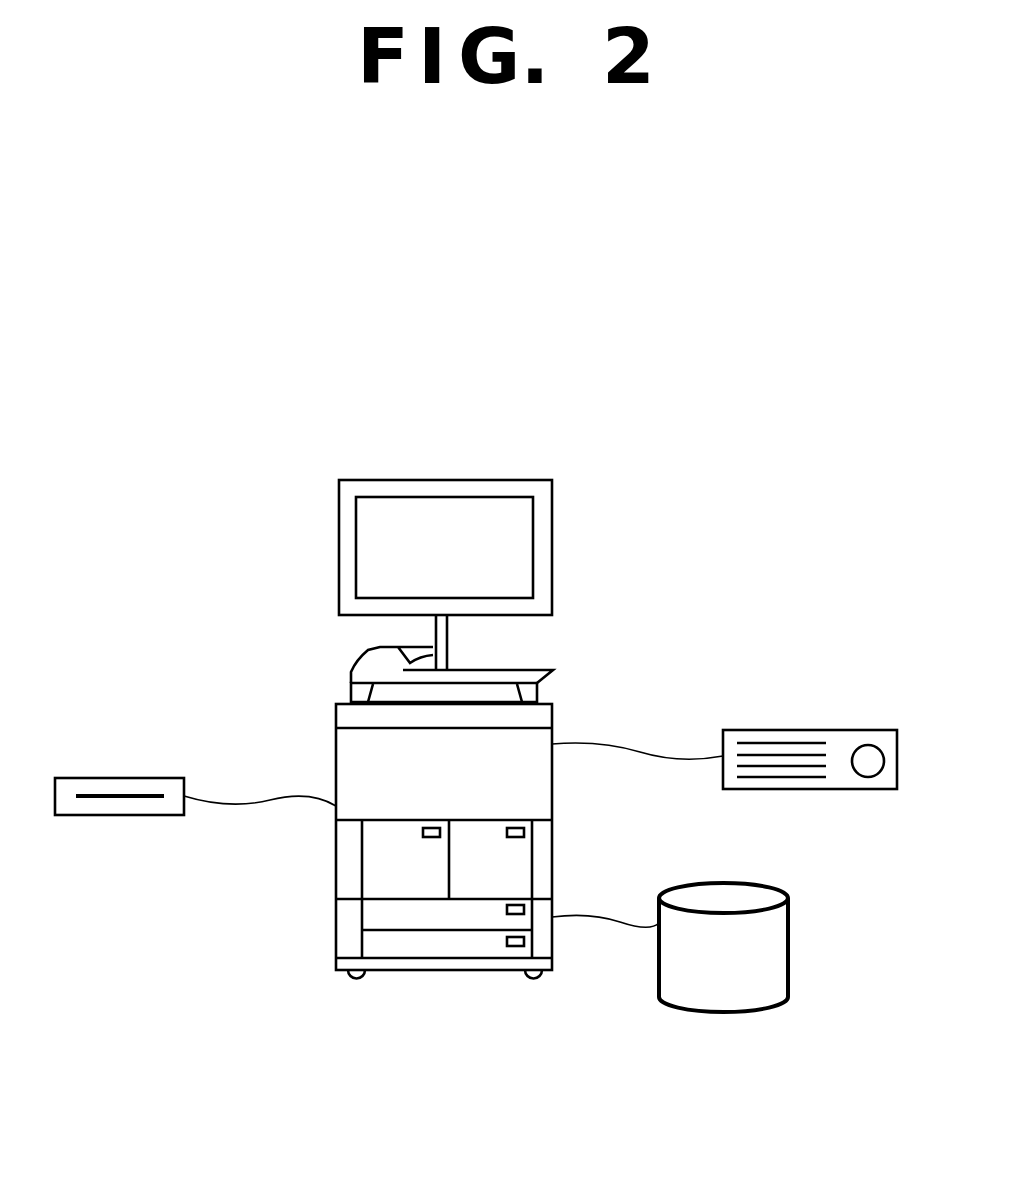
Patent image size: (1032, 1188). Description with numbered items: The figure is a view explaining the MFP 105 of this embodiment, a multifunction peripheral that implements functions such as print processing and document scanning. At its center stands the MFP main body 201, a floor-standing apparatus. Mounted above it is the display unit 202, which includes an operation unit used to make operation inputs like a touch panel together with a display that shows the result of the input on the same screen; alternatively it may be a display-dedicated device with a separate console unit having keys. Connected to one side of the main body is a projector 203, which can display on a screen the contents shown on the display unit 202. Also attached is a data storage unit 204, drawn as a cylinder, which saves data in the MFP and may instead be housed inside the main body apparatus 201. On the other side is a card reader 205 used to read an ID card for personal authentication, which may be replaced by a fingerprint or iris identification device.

The MFP 105 is at (433, 993).
The MFP main body 201 is at (336, 716).
The display unit 202 is at (400, 507).
The projector 203 is at (855, 730).
The data storage unit 204 is at (788, 930).
The card reader 205 is at (90, 778).